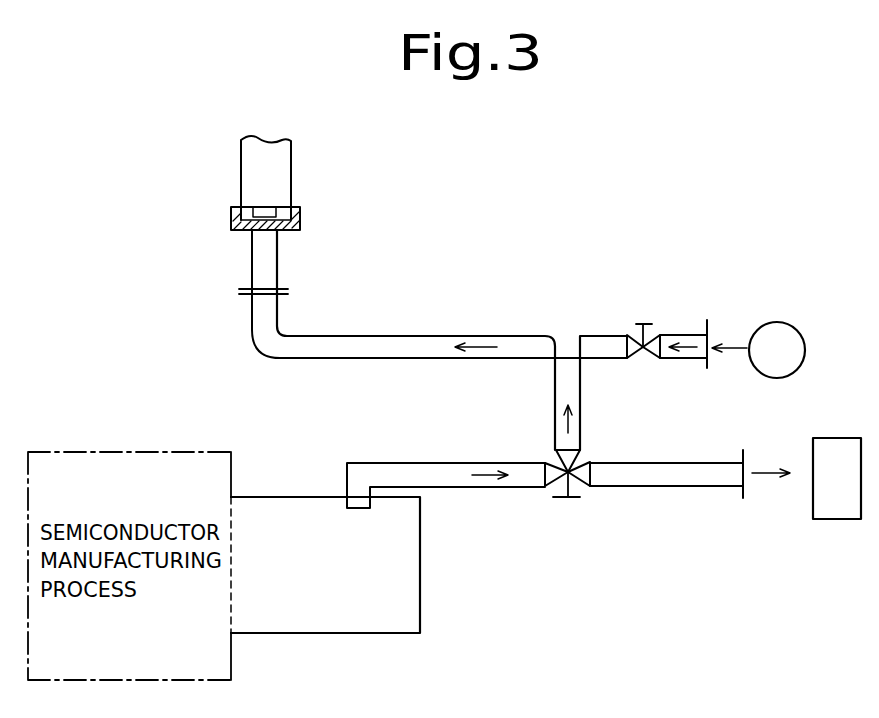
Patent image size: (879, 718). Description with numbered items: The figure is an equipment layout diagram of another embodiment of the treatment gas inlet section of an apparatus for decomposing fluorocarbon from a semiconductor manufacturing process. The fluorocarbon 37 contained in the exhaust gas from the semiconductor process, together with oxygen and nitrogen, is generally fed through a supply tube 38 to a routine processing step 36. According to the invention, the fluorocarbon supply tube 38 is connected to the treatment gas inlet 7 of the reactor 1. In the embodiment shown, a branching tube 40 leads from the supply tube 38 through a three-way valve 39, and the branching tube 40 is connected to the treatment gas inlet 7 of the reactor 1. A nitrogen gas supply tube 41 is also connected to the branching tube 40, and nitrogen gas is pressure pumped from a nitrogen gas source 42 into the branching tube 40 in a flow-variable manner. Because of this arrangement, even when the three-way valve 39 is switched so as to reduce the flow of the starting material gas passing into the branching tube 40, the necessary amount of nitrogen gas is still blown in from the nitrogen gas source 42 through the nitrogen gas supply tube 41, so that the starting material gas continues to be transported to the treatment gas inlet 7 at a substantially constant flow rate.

The reactor 1 is at (292, 182).
The treatment gas inlet 7 is at (263, 283).
The routine processing step 36 is at (813, 490).
The fluorocarbon 37 is at (420, 612).
The supply tube 38 is at (415, 463).
The three-way valve 39 is at (568, 497).
The branching tube 40 is at (555, 405).
The nitrogen gas supply tube 41 is at (683, 335).
The nitrogen gas source 42 is at (783, 322).